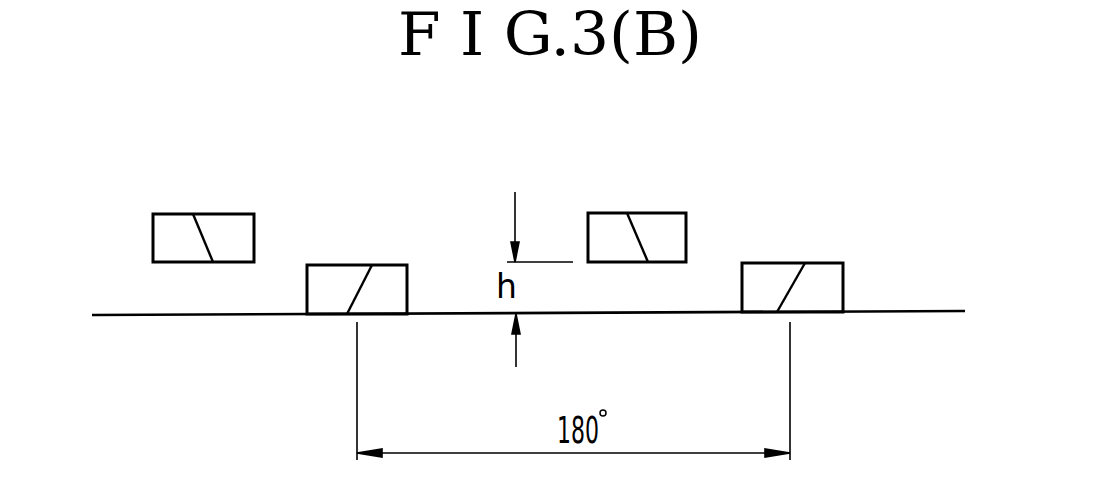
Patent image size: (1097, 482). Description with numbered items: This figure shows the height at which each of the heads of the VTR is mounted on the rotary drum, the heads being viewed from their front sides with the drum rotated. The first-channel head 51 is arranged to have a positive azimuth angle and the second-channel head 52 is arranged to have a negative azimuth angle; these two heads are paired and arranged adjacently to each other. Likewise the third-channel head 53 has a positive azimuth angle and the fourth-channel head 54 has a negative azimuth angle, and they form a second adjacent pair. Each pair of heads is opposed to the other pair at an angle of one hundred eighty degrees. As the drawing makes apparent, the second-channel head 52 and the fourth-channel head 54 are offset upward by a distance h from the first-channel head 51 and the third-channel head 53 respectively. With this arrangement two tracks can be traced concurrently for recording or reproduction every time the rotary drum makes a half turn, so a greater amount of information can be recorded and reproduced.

The head ch1 51 is at (407, 287).
The head ch2 52 is at (254, 233).
The head ch3 53 is at (843, 283).
The head ch4 54 is at (686, 232).